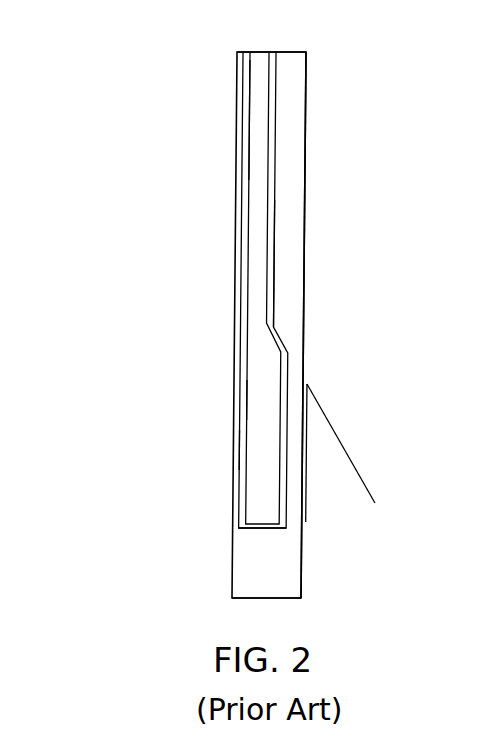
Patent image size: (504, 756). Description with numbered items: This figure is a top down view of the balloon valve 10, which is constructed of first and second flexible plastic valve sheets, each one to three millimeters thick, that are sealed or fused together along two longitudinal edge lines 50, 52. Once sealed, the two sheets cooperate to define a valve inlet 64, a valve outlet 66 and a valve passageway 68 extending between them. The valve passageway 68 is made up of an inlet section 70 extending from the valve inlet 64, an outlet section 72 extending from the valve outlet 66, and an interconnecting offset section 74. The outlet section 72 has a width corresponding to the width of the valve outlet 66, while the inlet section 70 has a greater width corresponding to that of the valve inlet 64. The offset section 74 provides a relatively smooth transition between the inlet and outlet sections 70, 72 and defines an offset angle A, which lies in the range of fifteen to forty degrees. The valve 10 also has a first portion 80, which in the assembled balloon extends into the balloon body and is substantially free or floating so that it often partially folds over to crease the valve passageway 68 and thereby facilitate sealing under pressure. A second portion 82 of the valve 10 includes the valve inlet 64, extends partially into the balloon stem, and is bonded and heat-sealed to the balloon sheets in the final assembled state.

The valve 10 is at (117, 218).
The longitudinal edge line 50 is at (275, 287).
The longitudinal edge line 52 is at (236, 289).
The valve inlet 64 is at (271, 528).
The valve outlet 66 is at (261, 52).
The valve passageway 68 is at (255, 391).
The inlet section 70 is at (255, 443).
The outlet section 72 is at (250, 118).
The offset section 74 is at (261, 348).
The first portion 80 is at (307, 83).
The second portion 82 is at (301, 560).
The offset angle A is at (372, 504).